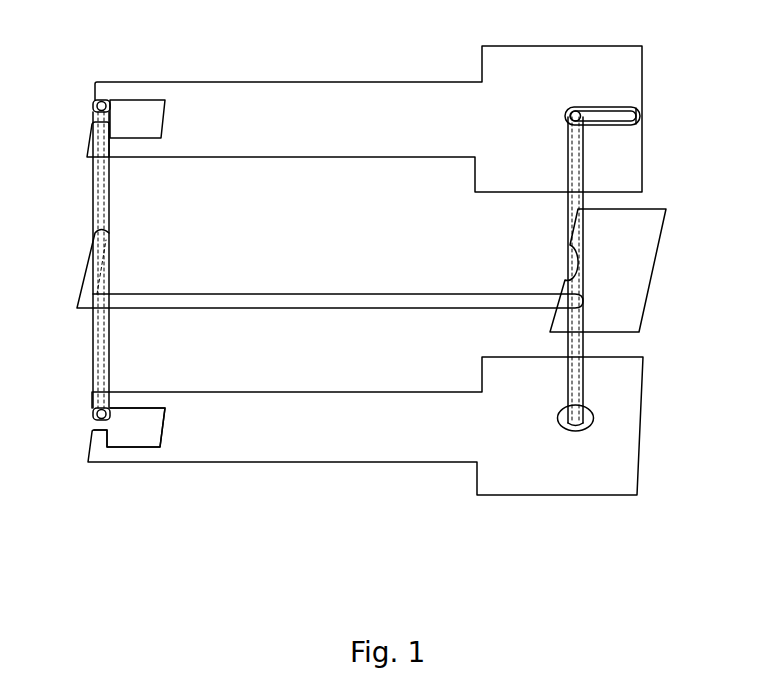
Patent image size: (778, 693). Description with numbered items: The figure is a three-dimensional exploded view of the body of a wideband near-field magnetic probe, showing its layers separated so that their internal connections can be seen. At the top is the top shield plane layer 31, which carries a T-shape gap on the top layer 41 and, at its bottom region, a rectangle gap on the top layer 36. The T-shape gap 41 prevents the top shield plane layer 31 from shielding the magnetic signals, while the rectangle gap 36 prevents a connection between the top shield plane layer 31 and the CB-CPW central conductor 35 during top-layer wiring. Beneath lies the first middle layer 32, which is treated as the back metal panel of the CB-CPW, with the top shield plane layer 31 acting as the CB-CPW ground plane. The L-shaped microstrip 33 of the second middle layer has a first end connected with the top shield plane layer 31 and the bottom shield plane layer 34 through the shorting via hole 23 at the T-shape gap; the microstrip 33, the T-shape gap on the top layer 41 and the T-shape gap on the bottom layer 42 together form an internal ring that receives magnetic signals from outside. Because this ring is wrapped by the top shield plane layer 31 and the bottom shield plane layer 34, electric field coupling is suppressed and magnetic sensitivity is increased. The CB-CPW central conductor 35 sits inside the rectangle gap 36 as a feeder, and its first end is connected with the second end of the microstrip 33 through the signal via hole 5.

The top shield plane layer 31 is at (272, 109).
The bottom shield plane layer 34 is at (310, 430).
The T-shape gap on the top layer 41 is at (135, 115).
The T-shape gap on the bottom layer 42 is at (152, 427).
The shorting via hole 23 is at (103, 212).
The microstrip of a magnetic probe 33 is at (248, 308).
The signal via hole 5 is at (568, 198).
The rectangle gap on the top layer 36 is at (582, 117).
The CB-CPW central conductor of a magnetic probe 35 is at (638, 110).
The first middle layer of a magnetic probe 32 is at (637, 298).